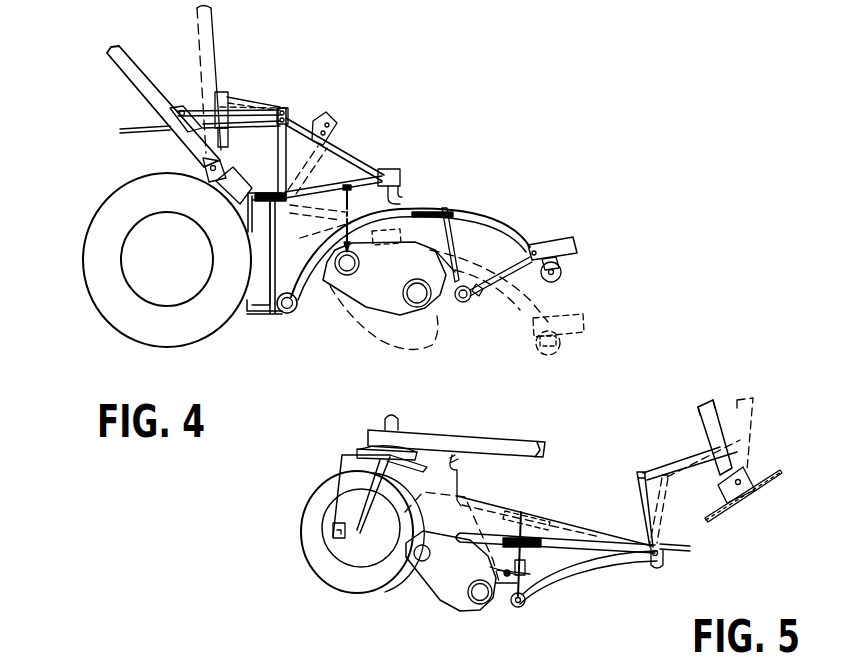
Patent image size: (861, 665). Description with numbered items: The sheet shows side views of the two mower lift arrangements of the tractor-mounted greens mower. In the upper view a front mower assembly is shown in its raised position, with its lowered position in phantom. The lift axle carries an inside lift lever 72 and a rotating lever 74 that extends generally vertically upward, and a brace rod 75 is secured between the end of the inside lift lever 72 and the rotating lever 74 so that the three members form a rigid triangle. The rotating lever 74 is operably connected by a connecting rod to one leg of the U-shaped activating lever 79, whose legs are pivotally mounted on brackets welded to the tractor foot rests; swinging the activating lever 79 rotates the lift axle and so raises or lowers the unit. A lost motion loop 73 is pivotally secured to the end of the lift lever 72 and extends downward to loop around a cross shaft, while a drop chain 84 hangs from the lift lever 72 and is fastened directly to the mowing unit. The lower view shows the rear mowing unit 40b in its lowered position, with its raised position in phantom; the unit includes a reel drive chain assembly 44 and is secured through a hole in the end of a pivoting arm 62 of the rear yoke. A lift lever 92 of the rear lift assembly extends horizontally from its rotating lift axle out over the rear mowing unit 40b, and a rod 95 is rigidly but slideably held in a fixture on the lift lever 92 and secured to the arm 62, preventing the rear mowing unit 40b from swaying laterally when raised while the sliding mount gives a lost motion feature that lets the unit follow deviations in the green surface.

In FIG. 4, the U-lever activating means 79 is at (137, 80).
In FIG. 4, the rotating lever 74 is at (282, 108).
In FIG. 4, the brace rod 75 is at (343, 152).
In FIG. 4, the inside lift lever 72 is at (400, 172).
In FIG. 4, the lost motion loop 73 is at (407, 198).
In FIG. 4, the drop chain 84 is at (280, 252).
In FIG. 5, the lift lever 92 is at (551, 538).
In FIG. 5, the reel drive chain assembly 44 is at (440, 580).
In FIG. 5, the rear mowing unit 40b is at (452, 607).
In FIG. 5, the rod 95 is at (524, 568).
In FIG. 5, the arm 62 is at (623, 570).